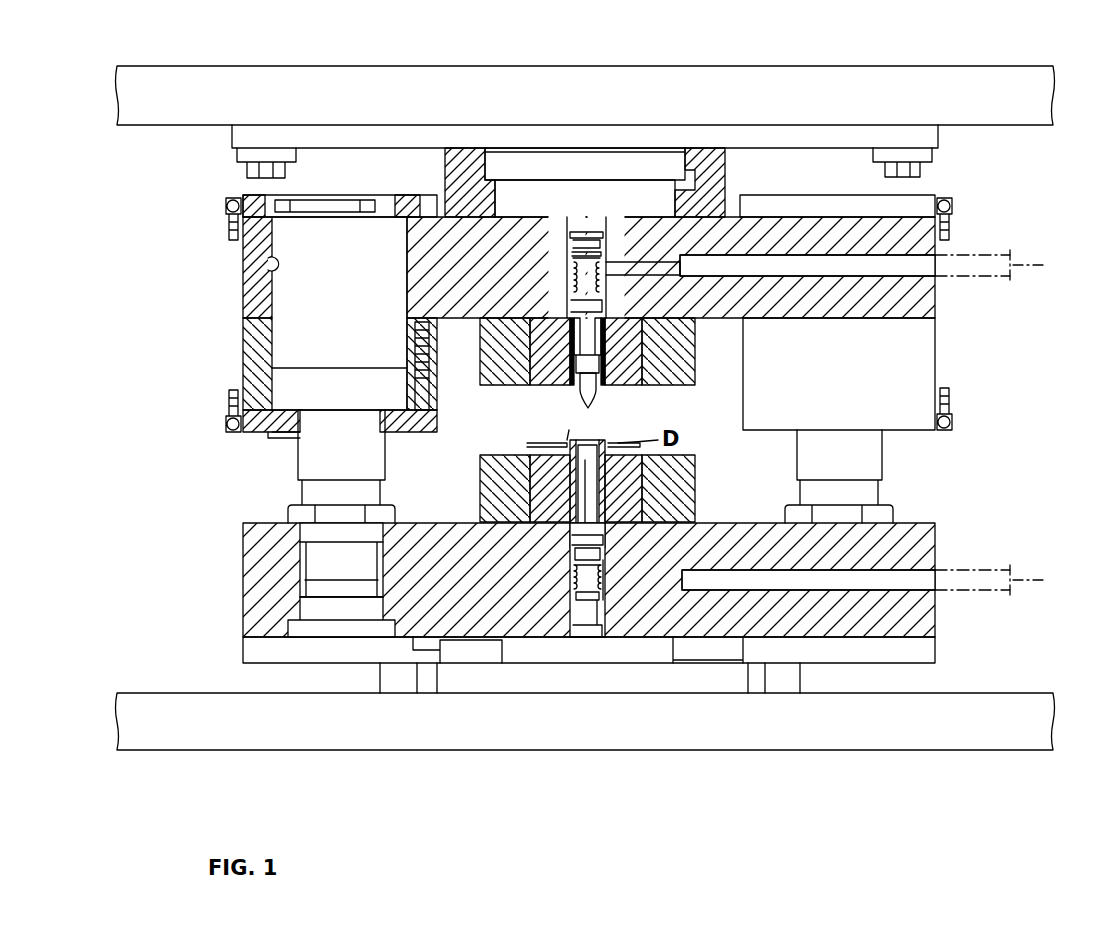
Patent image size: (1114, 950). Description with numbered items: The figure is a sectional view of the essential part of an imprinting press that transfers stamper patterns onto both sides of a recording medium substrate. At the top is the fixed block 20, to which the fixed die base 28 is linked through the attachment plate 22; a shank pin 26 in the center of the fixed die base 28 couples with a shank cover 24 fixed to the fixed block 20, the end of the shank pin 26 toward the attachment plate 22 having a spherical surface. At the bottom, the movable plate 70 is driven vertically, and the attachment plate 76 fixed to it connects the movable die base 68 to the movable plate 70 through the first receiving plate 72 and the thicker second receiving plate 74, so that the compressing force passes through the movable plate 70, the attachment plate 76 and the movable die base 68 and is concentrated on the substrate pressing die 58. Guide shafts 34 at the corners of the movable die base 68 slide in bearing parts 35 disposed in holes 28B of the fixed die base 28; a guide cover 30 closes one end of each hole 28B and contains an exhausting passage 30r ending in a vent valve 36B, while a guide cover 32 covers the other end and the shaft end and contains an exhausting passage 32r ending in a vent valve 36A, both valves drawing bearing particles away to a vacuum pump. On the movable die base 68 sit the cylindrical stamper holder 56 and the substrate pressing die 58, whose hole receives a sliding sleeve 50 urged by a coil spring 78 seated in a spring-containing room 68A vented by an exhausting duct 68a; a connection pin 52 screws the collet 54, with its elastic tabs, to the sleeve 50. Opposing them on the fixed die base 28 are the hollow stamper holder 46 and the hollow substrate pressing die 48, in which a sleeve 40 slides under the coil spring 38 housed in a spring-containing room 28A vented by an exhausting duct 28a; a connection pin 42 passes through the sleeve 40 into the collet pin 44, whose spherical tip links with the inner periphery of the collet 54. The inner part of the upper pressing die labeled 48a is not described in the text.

The fixed block 20 is at (753, 75).
The attachment plate 22 is at (902, 135).
The shank cover 24 is at (462, 148).
The shank pin 26 is at (540, 158).
The fixed die base 28 is at (900, 246).
The spring-containing room 28A is at (572, 265).
The hole 28B is at (270, 262).
The exhausting duct 28a is at (888, 275).
The guide cover 30 is at (244, 352).
The exhausting passage 30r is at (278, 433).
The guide cover 32 is at (268, 186).
The exhausting passage 32r is at (298, 202).
The guide shaft 34 is at (310, 465).
The bearing part 35 is at (276, 385).
The vent valve 36A is at (226, 213).
The vent valve 36B is at (226, 422).
The coil spring 38 is at (613, 265).
The sleeve 40 is at (500, 318).
The connection pin 42 is at (621, 337).
The collet pin 44 is at (585, 383).
The stamper holder 46 is at (684, 372).
The substrate pressing die 48 is at (636, 372).
The upper die insert inner part 48a is at (533, 383).
The sleeve 50 is at (573, 540).
The connection pin 52 is at (568, 535).
The collet 54 is at (562, 440).
The stamper holder 56 is at (690, 489).
The substrate pressing die 58 is at (643, 457).
The movable die base 68 is at (935, 530).
The spring-containing room 68A is at (573, 608).
The exhausting duct 68a is at (878, 592).
The movable plate 70 is at (853, 740).
The first receiving plate 72 is at (260, 650).
The second receiving plate 74 is at (537, 657).
The attachment plate 76 is at (710, 690).
The coil spring 78 is at (595, 577).